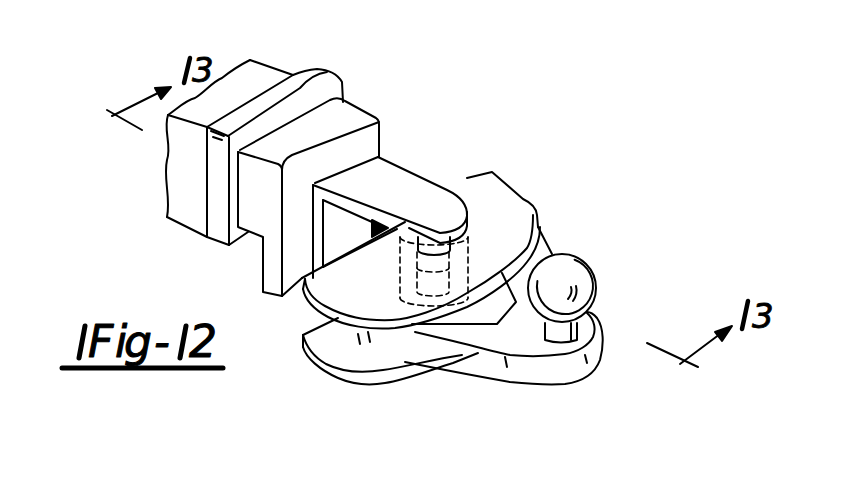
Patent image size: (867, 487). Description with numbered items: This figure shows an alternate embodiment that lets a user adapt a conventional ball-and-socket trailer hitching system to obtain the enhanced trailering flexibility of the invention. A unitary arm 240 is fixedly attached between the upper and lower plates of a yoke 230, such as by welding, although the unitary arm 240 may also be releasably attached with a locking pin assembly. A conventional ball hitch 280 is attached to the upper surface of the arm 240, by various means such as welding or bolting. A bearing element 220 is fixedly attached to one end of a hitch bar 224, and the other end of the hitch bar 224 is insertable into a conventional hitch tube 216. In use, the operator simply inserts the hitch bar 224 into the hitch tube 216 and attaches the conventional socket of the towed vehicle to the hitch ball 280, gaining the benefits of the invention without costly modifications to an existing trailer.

The hitch tube 216 is at (315, 74).
The hitch bar 224 is at (345, 116).
The bearing element 220 is at (412, 183).
The yoke 230 is at (507, 212).
The ball hitch 280 is at (583, 265).
The unitary arm 240 is at (487, 357).